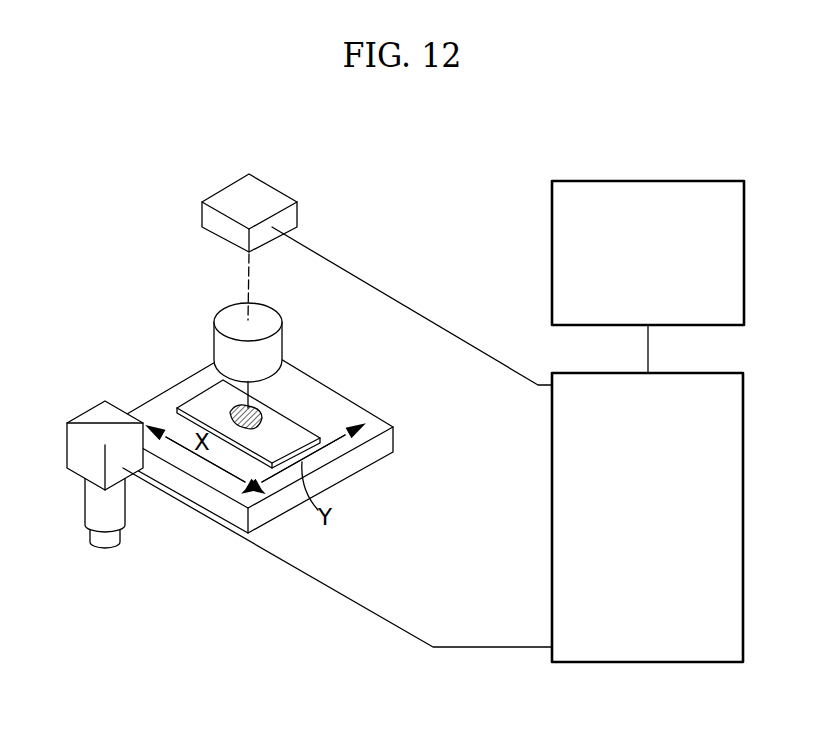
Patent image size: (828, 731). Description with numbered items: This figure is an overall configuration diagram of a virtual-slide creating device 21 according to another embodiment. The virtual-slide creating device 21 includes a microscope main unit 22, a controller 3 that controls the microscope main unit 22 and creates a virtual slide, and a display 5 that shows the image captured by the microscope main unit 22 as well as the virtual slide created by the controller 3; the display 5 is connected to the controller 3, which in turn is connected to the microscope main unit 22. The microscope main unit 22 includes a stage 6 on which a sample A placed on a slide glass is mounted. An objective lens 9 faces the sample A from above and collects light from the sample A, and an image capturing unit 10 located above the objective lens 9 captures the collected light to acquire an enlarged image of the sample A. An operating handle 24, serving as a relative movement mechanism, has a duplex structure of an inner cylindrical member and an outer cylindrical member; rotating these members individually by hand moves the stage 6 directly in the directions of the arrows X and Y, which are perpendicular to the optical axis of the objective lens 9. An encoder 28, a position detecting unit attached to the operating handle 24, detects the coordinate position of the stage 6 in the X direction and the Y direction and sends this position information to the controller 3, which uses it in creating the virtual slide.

The virtual-slide creating device 21 is at (449, 192).
The microscope main unit 22 is at (133, 307).
The stage 6 is at (116, 381).
The objective lens 9 is at (223, 313).
The image capturing unit 10 is at (272, 185).
The operating handle 24 is at (118, 512).
The encoder 28 is at (82, 410).
The display 5 is at (744, 247).
The controller 3 is at (743, 512).
The sample A is at (260, 418).